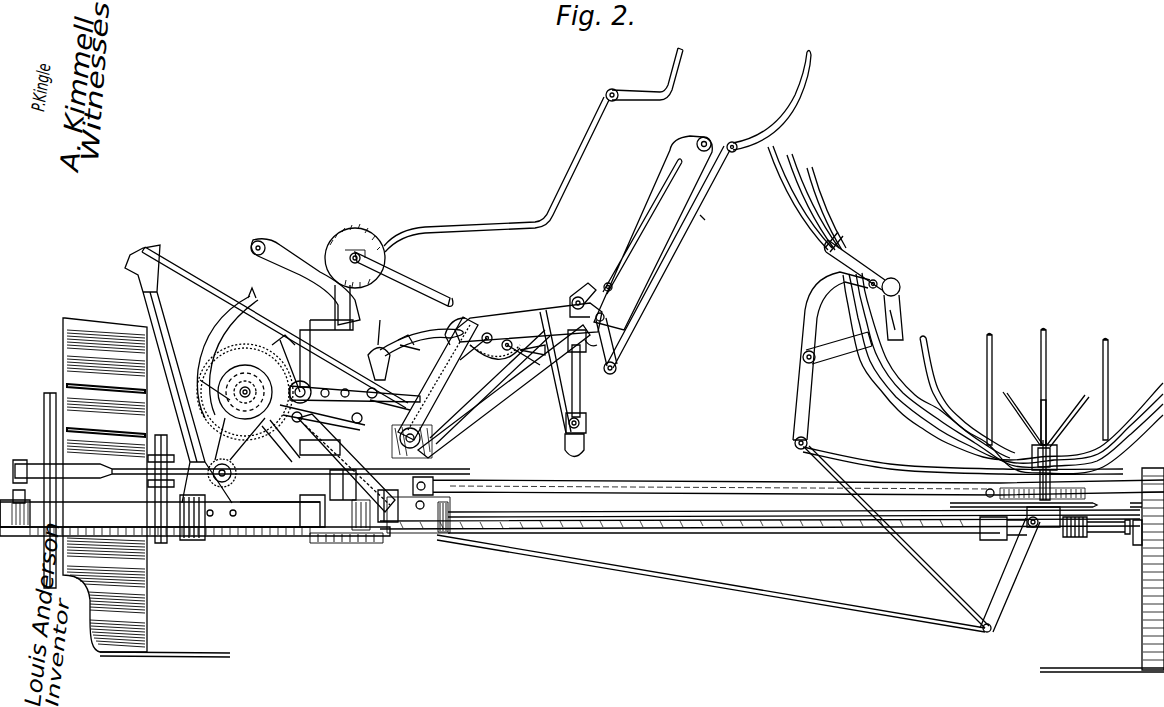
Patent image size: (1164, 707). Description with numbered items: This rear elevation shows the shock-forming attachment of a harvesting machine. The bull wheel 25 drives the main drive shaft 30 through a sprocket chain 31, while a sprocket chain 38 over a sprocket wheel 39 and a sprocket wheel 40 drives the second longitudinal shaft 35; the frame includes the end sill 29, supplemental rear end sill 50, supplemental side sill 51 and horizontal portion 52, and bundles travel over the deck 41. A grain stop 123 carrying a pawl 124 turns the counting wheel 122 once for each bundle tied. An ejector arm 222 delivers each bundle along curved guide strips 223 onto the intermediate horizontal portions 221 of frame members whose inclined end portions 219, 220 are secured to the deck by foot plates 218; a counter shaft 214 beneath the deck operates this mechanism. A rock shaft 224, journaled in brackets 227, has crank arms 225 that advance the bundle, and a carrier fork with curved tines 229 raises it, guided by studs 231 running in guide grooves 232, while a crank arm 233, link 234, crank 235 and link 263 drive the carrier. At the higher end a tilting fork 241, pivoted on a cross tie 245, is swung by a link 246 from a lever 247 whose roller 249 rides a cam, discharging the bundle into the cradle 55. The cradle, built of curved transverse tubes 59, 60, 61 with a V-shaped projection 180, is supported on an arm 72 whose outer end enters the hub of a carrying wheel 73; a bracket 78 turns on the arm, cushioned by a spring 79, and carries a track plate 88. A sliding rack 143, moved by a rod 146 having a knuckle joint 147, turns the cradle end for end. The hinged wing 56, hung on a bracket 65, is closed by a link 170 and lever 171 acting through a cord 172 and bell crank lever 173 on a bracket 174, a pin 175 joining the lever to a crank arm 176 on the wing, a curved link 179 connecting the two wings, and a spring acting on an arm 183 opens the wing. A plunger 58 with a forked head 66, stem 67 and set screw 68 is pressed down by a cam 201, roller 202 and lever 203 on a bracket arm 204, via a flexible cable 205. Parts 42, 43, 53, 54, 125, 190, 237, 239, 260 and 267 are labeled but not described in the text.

The bull wheel 25 is at (97, 328).
The end sill 29 is at (60, 525).
The main drive shaft 30 is at (125, 527).
The sprocket chain 31 is at (44, 415).
The second longitudinal shaft 35 is at (182, 378).
The sprocket chain 38 is at (246, 436).
The sprocket wheel 39 is at (233, 517).
The sprocket wheel 40 is at (212, 356).
The deck 41 is at (190, 268).
The hand wheel 42 is at (350, 258).
The bracket 43 is at (286, 363).
The supplemental rear end sill 50 is at (286, 536).
The supplemental side sill 51 is at (386, 525).
The horizontal portion 52 is at (198, 540).
The strut 53 is at (350, 470).
The block 54 is at (358, 533).
The cradle 55 is at (1012, 373).
The hinged wing 56 is at (810, 185).
The plunger 58 is at (993, 345).
The curved transverse tube 59 is at (940, 432).
The curved transverse tube 60 is at (900, 405).
The curved transverse tube 61 is at (862, 375).
The bracket 65 is at (902, 294).
The forked head 66 is at (1061, 411).
The stem 67 is at (1058, 468).
The set screw 68 is at (1050, 438).
The arm 72 is at (773, 534).
The carrying wheel 73 is at (1140, 602).
The bracket 78 is at (1043, 530).
The spring 79 is at (1078, 538).
The track plate 88 is at (1094, 505).
The counting wheel 122 is at (375, 425).
The grain stop 123 is at (380, 320).
The pawl 124 is at (354, 381).
The link 125 is at (322, 417).
The sliding rack 143 is at (985, 490).
The rod 146 is at (726, 480).
The knuckle joint 147 is at (432, 480).
The link 170 is at (645, 570).
The lever 171 is at (996, 596).
The cord 172 is at (880, 545).
The bell crank lever 173 is at (795, 405).
The bracket 174 is at (805, 345).
The pin 175 is at (805, 275).
The crank arm 176 is at (860, 252).
The link 179 is at (848, 458).
The V-shaped projection 180 is at (1025, 418).
The arm 183 is at (830, 228).
The bracket 190 is at (420, 535).
The cam 201 is at (312, 540).
The roller 202 is at (330, 483).
The lever 203 is at (318, 510).
The bracket arm 204 is at (310, 455).
The flexible cable 205 is at (712, 530).
The counter shaft 214 is at (478, 428).
The foot plate 218 is at (385, 407).
The inclined end portion 219 is at (425, 392).
The outer oblique portion 220 is at (648, 210).
The intermediate horizontal portion 221 is at (498, 341).
The ejector arm 222 is at (418, 285).
The curved guide strip 223 is at (392, 350).
The rock shaft 224 is at (500, 320).
The crank arm 225 is at (478, 360).
The bracket 227 is at (465, 318).
The curved tine 229 is at (535, 358).
The stud 231 is at (604, 285).
The guide groove 232 is at (648, 238).
The crank arm 233 is at (572, 300).
The link 234 is at (566, 430).
The crank 235 is at (586, 443).
The pawl 237 is at (595, 350).
The rod 239 is at (552, 380).
The tilting fork 241 is at (785, 108).
The cross tie 245 is at (705, 136).
The link 246 is at (705, 204).
The lever 247 is at (606, 316).
The roller 249 is at (615, 335).
The lug 260 is at (416, 339).
The link 263 is at (582, 400).
The bar 267 is at (480, 392).